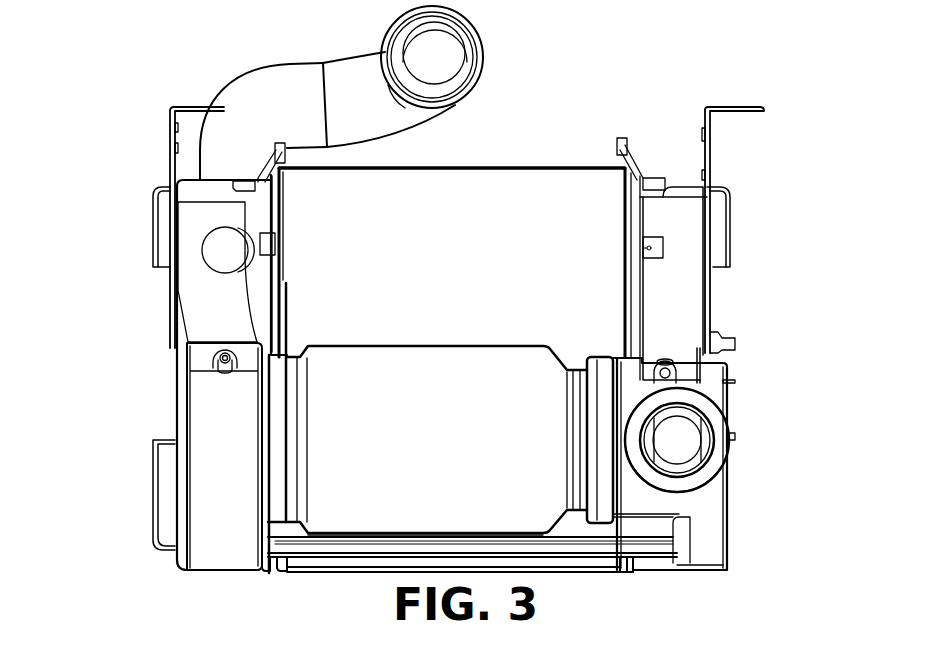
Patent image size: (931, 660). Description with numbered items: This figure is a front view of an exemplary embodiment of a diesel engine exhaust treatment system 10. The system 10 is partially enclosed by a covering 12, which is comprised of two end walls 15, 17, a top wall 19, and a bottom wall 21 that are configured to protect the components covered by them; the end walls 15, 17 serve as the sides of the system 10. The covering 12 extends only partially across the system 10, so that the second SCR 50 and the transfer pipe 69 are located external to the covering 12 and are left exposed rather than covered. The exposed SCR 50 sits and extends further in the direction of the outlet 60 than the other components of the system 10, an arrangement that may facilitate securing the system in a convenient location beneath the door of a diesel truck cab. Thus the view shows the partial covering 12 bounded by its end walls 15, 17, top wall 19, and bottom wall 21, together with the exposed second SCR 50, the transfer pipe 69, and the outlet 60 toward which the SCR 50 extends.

The diesel engine exhaust treatment system 10 is at (86, 90).
The covering 12 is at (525, 200).
The top wall 19 is at (505, 167).
The end wall 17 is at (712, 312).
The end wall 15 is at (175, 364).
The second SCR 50 is at (337, 470).
The outlet 60 is at (685, 443).
The transfer pipe 69 is at (328, 547).
The bottom wall 21 is at (565, 572).